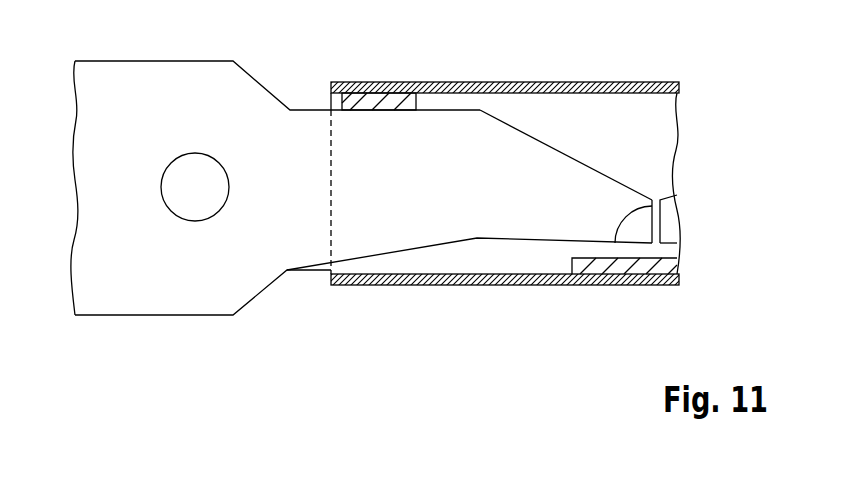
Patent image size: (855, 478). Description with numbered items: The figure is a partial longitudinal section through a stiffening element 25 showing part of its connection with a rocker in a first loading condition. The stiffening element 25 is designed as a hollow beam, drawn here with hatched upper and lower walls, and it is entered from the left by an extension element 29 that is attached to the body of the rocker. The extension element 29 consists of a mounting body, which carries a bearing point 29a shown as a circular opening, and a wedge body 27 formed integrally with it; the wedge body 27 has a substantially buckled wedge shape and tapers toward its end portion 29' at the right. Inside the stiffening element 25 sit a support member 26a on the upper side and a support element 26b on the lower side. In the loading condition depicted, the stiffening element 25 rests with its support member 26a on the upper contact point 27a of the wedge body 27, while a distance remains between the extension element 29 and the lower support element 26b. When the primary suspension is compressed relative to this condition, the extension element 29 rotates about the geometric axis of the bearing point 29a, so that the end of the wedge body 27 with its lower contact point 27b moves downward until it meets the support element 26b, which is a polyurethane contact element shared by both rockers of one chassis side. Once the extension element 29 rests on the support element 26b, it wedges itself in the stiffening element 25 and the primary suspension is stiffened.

The extension element 29 is at (201, 159).
The bearing point 29a is at (195, 213).
The end portion of contact element 29' is at (702, 216).
The stiffening element 25 is at (560, 82).
The support member 26a is at (367, 102).
The support element 26b is at (630, 265).
The wedge body 27 is at (445, 220).
The upper contact point 27a is at (428, 110).
The lower contact point 27b is at (660, 200).